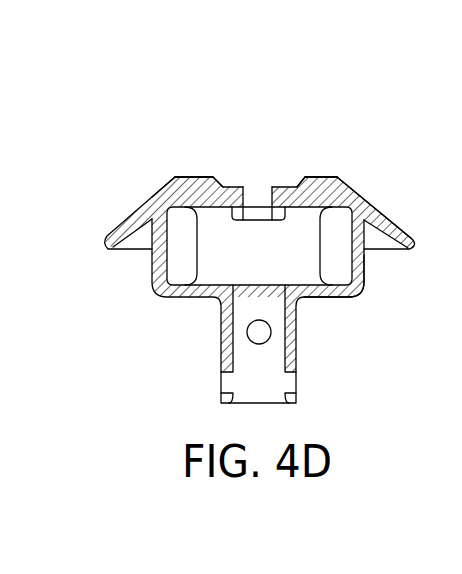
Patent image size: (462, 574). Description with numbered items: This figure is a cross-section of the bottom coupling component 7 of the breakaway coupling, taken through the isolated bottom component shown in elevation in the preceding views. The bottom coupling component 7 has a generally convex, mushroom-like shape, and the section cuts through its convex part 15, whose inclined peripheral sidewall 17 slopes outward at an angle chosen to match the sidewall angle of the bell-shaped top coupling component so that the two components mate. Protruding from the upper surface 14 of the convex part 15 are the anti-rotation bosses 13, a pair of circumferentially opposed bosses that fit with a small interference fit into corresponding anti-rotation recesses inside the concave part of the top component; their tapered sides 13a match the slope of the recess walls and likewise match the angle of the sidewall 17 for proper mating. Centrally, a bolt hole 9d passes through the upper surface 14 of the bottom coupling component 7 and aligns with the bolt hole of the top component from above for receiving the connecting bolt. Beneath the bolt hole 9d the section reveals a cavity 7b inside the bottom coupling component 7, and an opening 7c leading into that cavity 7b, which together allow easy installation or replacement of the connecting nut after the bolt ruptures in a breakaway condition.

The bottom coupling component 7 is at (138, 337).
The cavity 7b is at (303, 240).
The opening 7c is at (343, 288).
The bolt hole 9d is at (258, 196).
The anti-rotation bosses 13 is at (187, 177).
The tapered sides 13a is at (168, 177).
The upper surface 14 is at (258, 196).
The convex part 15 is at (362, 165).
The inclined peripheral sidewall 17 is at (128, 217).